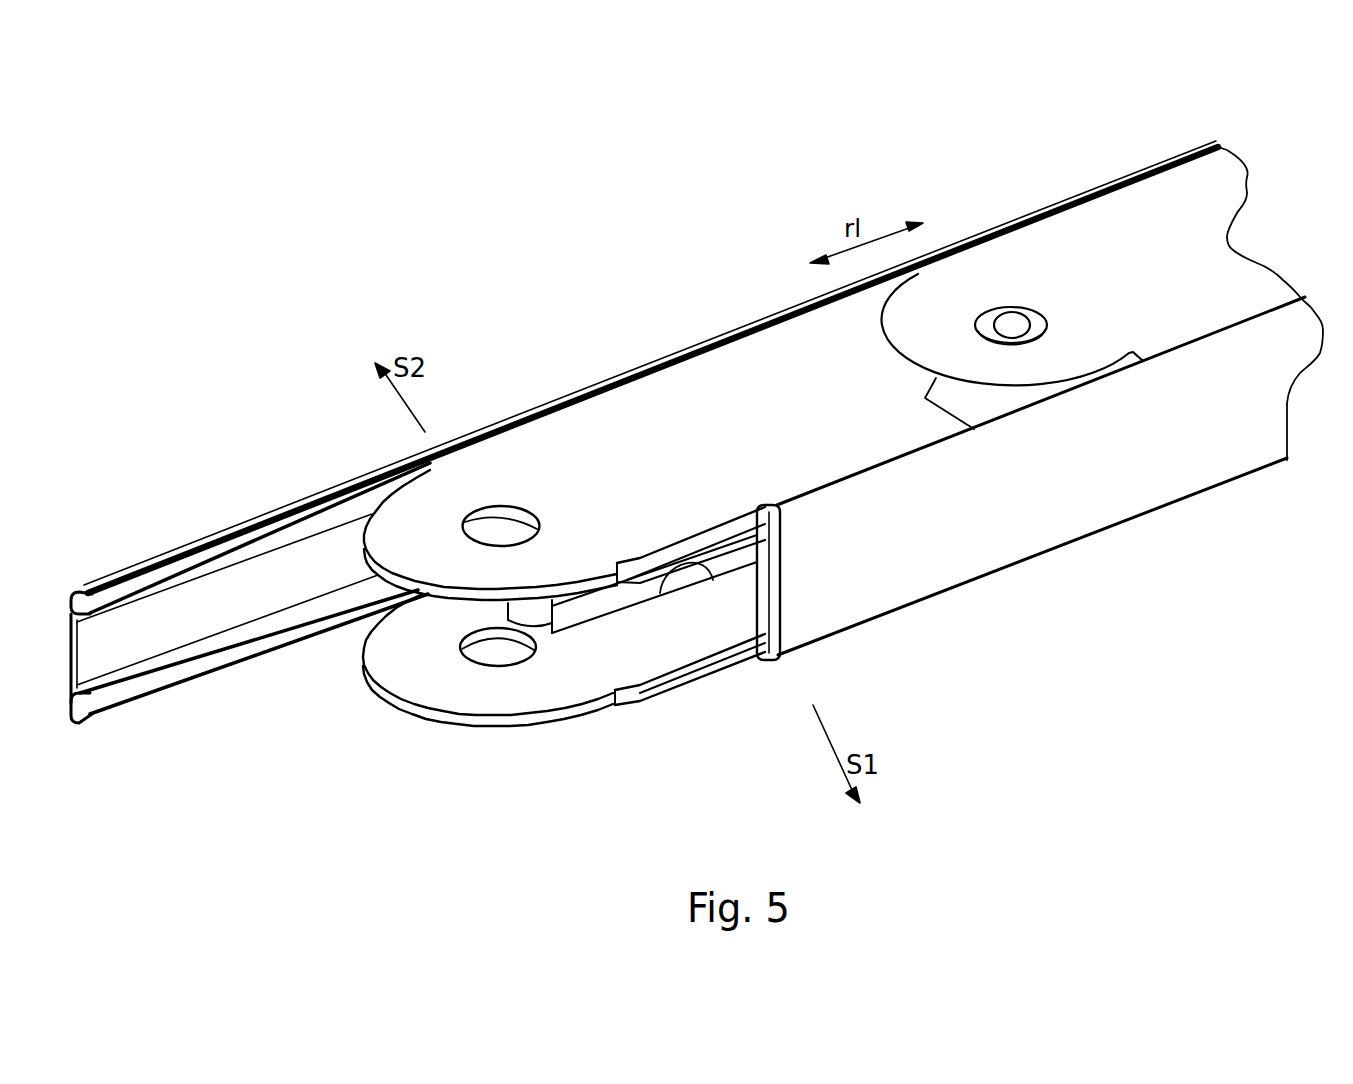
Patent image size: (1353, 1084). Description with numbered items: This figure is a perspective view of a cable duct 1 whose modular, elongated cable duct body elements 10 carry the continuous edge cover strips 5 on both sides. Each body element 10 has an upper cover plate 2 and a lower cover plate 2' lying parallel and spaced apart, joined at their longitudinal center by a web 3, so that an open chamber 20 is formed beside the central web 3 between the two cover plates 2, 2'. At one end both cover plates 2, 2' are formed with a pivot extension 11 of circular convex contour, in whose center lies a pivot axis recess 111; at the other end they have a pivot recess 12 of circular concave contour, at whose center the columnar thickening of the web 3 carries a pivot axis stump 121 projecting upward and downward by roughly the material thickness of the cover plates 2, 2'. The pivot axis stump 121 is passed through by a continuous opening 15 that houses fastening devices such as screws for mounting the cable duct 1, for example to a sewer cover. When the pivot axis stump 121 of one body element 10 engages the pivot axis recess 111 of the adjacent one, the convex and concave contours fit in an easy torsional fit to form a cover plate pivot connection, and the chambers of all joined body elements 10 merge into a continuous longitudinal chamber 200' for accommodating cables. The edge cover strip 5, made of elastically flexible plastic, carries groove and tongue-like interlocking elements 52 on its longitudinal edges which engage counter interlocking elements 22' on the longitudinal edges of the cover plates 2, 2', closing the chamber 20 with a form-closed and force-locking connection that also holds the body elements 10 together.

The cable duct 1 is at (753, 293).
The upper cover plate 2 is at (511, 442).
The lower cover plate 2' is at (654, 652).
The web 3 is at (598, 603).
The edge cover strip 5 is at (150, 632).
The cable duct body element 10 is at (768, 410).
The pivot extension 11 is at (440, 683).
The pivot recess 12 is at (965, 430).
The continuous opening 15 is at (1012, 325).
The open chamber 20 is at (720, 620).
The counter interlocking element 22' is at (838, 616).
The interlocking element 52 is at (110, 605).
The pivot axis recess 111 is at (501, 508).
The pivot axis stump 121 is at (983, 318).
The continuous longitudinal chamber 200' is at (339, 696).